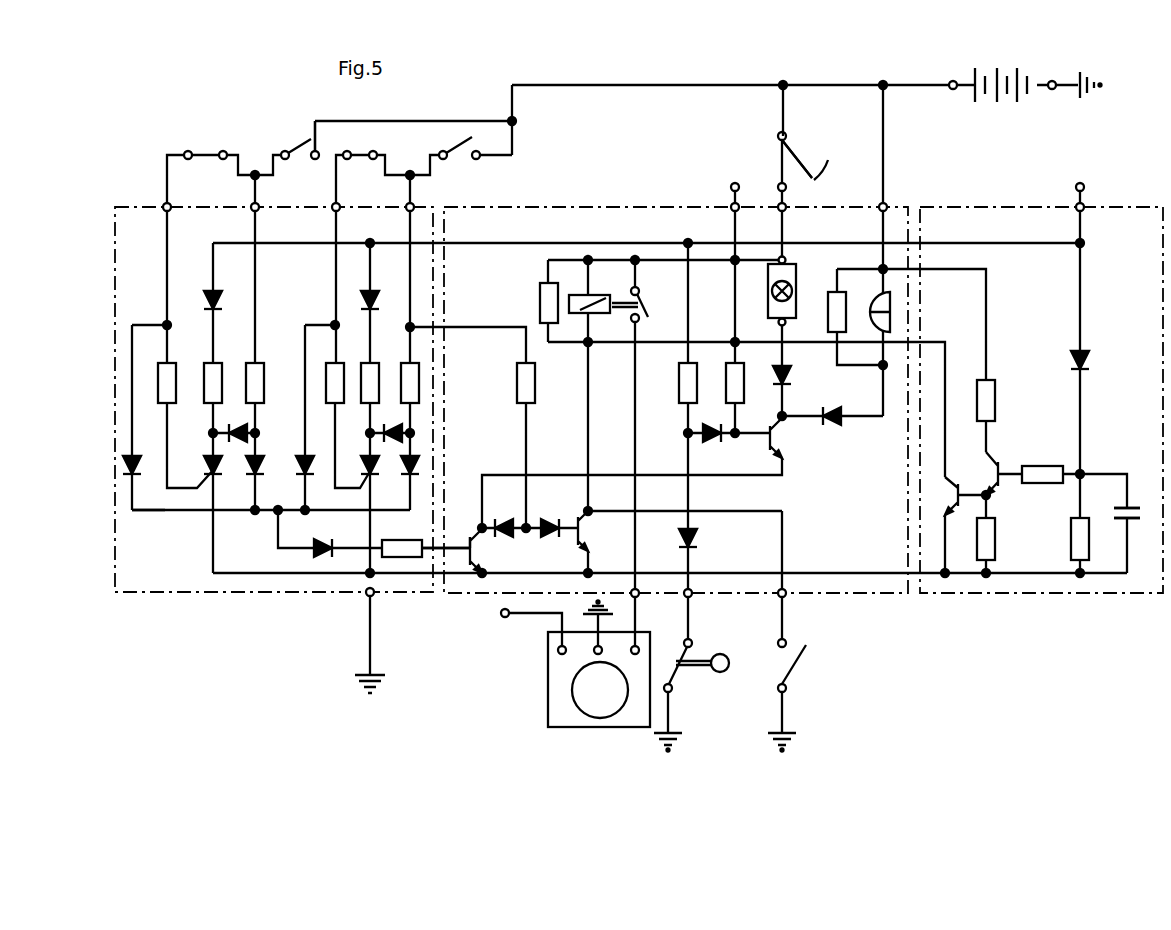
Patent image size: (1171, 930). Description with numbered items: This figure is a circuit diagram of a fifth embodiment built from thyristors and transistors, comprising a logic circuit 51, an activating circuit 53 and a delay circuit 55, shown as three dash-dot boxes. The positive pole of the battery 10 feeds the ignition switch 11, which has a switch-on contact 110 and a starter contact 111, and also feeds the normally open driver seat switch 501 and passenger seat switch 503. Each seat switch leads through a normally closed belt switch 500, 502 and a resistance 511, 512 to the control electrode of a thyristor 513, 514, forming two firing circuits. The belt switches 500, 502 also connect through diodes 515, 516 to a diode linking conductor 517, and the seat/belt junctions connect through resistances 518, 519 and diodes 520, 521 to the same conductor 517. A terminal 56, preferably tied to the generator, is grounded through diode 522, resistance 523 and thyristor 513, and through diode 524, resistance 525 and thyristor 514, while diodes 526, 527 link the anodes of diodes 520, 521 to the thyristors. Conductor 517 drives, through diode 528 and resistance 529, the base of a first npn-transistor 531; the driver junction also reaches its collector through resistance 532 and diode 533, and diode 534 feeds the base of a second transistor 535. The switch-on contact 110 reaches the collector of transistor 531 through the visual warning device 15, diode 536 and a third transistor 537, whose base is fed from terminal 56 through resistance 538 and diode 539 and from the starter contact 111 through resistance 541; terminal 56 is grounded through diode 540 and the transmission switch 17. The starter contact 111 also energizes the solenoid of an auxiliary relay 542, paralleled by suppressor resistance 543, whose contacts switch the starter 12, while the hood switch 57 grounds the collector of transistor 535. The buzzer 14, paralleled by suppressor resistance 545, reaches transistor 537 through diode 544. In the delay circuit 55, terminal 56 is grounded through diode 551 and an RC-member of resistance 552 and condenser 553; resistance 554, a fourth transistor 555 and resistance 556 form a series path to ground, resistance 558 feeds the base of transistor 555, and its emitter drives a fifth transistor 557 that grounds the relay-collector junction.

The battery 10 is at (1005, 72).
The ignition switch 11 is at (806, 146).
The engine starter motor 12 is at (548, 691).
The buzzer 14 is at (877, 298).
The visual warning device 15 is at (797, 282).
The shutoff switch 17 is at (702, 660).
The logic circuit 51 is at (253, 594).
The activating circuit 53 is at (833, 594).
The delay circuit 55 is at (1045, 594).
The terminal 56 is at (1085, 187).
The switch 57 is at (805, 660).
The switch-on contact 110 is at (788, 186).
The starter contact 111 is at (729, 188).
The driver belt switch 500 is at (349, 152).
The driver seat switch 501 is at (455, 144).
The passenger belt switch 502 is at (205, 153).
The passenger seat switch 503 is at (304, 143).
The resistance 511 is at (338, 368).
The resistance 512 is at (172, 368).
The thyristor 513 is at (367, 478).
The thyristor 514 is at (217, 470).
The diode 515 is at (308, 470).
The diode 516 is at (136, 458).
The diode linking conductor 517 is at (150, 512).
The resistance 518 is at (405, 388).
The resistance 519 is at (260, 368).
The diode 520 is at (404, 472).
The diode 521 is at (258, 470).
The diode 522 is at (376, 298).
The resistance 523 is at (374, 368).
The diode 524 is at (219, 298).
The resistance 525 is at (218, 368).
The diode 526 is at (385, 430).
The diode 527 is at (248, 430).
The diode 528 is at (320, 542).
The resistance 529 is at (391, 543).
The npn-transistor 531 is at (468, 535).
The resistance 532 is at (517, 384).
The diode 533 is at (505, 521).
The diode 534 is at (547, 521).
The npn-transistor 535 is at (585, 534).
The diode 536 is at (793, 377).
The npn-transistor 537 is at (786, 438).
The resistance 538 is at (679, 385).
The diode 539 is at (714, 441).
The diode 540 is at (701, 538).
The resistance 541 is at (745, 385).
The auxiliary relay 542 is at (598, 298).
The suppressor resistance 543 is at (538, 292).
The diode 544 is at (845, 426).
The suppressor resistance 545 is at (828, 312).
The diode 551 is at (1091, 359).
The resistance 552 is at (1071, 550).
The condenser 553 is at (1139, 512).
The resistance 554 is at (995, 391).
The fourth npn-transistor 555 is at (993, 468).
The resistance 556 is at (987, 536).
The fifth transistor 557 is at (955, 490).
The resistance 558 is at (1036, 470).